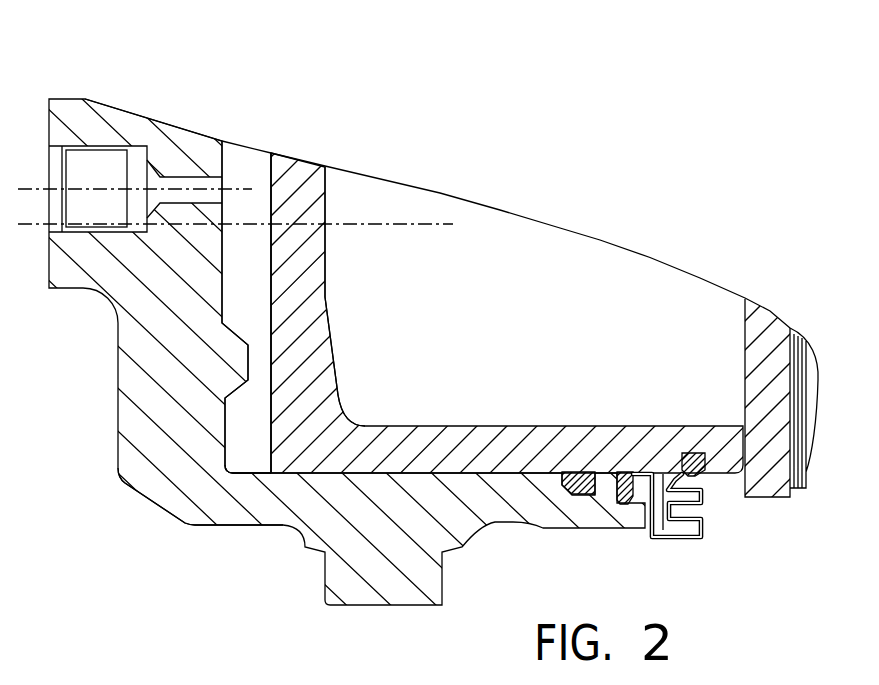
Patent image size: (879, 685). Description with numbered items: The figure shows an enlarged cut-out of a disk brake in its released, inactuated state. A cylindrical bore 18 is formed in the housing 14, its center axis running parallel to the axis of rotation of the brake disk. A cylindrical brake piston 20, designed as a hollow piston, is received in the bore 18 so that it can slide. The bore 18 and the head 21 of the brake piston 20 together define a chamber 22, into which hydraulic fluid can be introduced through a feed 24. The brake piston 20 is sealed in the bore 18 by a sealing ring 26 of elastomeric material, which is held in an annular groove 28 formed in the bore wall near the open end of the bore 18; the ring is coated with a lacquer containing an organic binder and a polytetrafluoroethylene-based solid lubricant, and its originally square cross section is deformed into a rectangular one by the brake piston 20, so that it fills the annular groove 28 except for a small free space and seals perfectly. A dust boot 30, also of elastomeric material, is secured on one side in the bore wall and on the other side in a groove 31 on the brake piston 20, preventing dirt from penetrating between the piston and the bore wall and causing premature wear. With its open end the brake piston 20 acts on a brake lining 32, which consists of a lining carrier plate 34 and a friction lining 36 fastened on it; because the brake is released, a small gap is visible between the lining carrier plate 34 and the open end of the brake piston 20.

The housing 14 is at (153, 135).
The bore 18 is at (258, 470).
The brake piston 20 is at (427, 438).
The head 21 is at (316, 304).
The chamber 22 is at (250, 415).
The feed 24 is at (207, 183).
The sealing ring 26 is at (580, 470).
The annular groove 28 is at (563, 472).
The dust boot 30 is at (705, 517).
The groove 31 is at (673, 448).
The brake lining 32 is at (715, 256).
The lining carrier plate 34 is at (763, 330).
The friction lining 36 is at (803, 337).